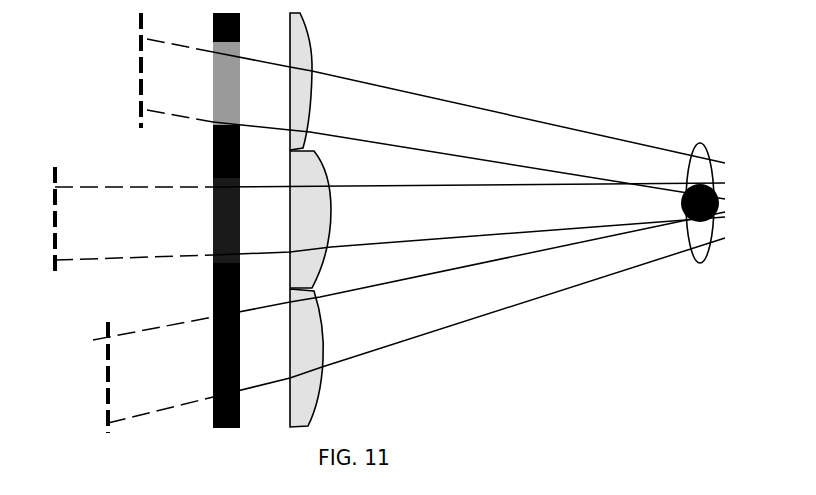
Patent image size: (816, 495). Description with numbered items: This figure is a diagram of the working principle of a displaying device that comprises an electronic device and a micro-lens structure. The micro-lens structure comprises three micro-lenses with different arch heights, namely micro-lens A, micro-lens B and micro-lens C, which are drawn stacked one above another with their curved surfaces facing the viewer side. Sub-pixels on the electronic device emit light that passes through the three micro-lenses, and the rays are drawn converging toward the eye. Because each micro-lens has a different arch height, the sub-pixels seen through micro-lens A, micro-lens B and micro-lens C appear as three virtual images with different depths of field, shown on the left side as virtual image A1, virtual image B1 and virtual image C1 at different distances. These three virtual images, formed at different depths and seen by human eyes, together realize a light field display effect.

The virtual image A1 is at (115, 70).
The virtual image B1 is at (78, 222).
The virtual image C1 is at (89, 377).
The micro-lens A is at (309, 81).
The micro-lens B is at (316, 219).
The micro-lens C is at (310, 358).